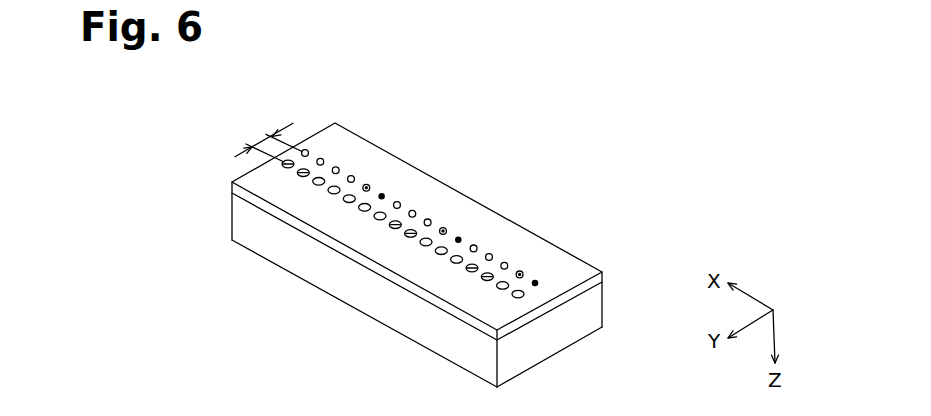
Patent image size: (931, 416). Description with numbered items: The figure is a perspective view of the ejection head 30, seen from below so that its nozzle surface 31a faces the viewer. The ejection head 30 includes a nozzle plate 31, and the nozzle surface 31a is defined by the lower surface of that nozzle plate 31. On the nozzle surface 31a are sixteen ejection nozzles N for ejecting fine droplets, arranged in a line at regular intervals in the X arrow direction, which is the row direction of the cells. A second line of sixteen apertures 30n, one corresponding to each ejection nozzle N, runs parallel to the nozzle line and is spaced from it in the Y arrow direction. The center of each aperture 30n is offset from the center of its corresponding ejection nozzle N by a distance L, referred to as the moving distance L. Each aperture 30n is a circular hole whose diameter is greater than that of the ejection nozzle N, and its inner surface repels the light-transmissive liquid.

The ejection head 30 is at (442, 238).
The nozzle plate 31 is at (603, 272).
The nozzle surface 31a is at (345, 143).
The apertures 30n is at (290, 168).
The ejection nozzles N is at (381, 194).
The moving distance L is at (268, 140).